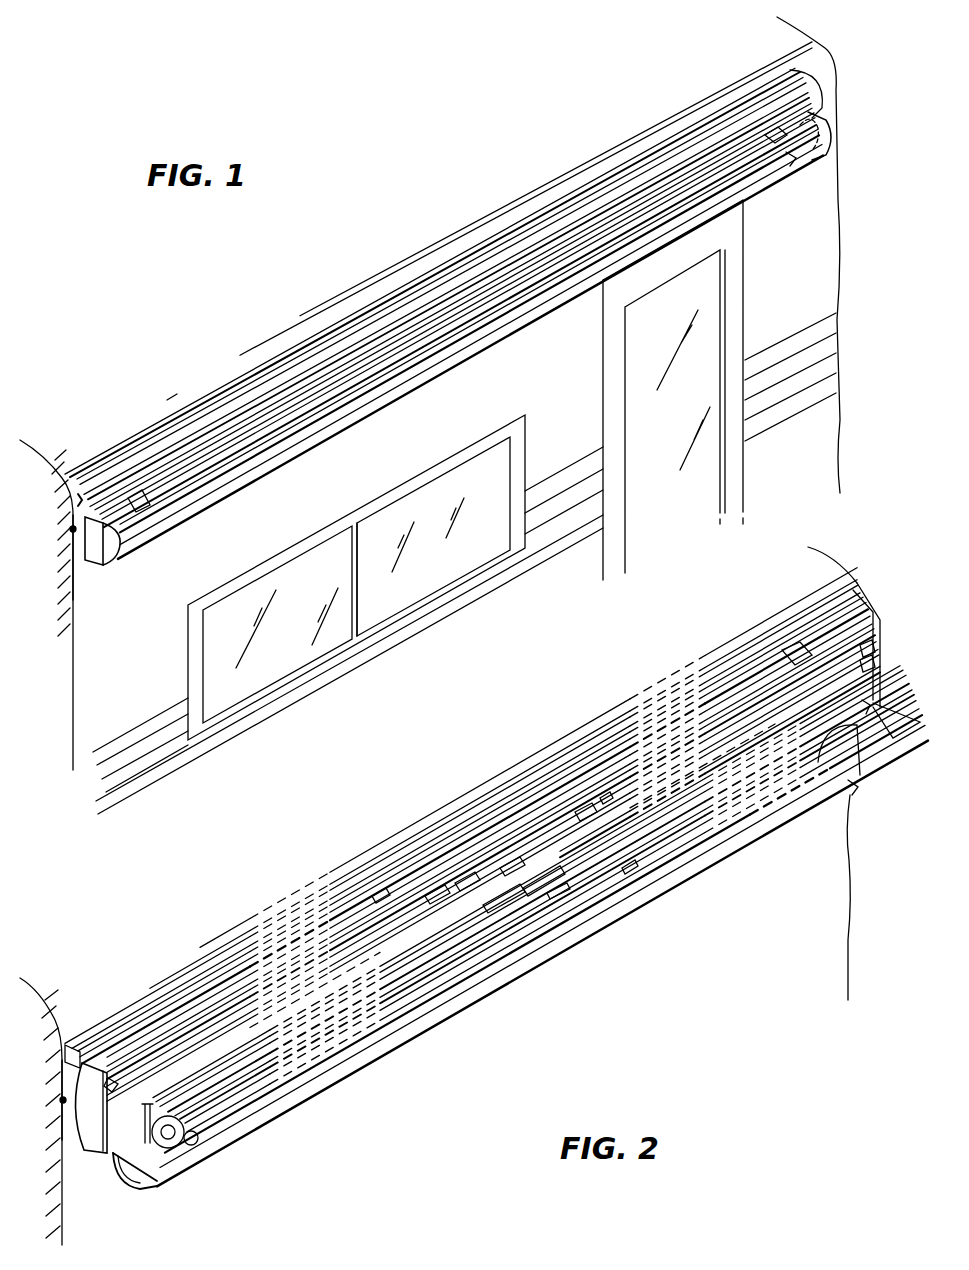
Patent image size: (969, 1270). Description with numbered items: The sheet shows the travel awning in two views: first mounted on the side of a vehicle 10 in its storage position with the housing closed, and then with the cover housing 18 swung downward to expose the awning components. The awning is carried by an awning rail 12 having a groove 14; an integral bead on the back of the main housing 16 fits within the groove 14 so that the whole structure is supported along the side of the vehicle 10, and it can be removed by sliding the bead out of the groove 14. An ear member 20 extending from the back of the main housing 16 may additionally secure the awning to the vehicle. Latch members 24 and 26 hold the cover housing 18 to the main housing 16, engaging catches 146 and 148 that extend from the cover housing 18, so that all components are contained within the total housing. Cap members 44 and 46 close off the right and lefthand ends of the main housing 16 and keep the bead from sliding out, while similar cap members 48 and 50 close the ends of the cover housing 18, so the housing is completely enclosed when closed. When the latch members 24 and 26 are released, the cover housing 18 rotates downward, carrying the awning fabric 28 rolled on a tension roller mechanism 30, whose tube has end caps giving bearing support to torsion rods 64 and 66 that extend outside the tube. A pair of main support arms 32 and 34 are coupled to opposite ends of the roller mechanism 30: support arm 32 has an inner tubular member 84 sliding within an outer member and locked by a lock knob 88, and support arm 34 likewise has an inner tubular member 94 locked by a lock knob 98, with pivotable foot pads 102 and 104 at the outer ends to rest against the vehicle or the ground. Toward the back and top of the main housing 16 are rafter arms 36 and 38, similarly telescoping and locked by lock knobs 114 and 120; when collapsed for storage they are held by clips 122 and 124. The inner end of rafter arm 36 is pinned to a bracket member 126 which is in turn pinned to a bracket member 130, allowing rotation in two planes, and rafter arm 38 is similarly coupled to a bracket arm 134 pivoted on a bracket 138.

In FIG. 1, the vehicle 10 is at (111, 470).
In FIG. 2, the vehicle 10 is at (198, 946).
In FIG. 1, the awning rail 12 is at (79, 499).
In FIG. 2, the awning rail 12 is at (127, 1085).
In FIG. 1, the groove 14 is at (71, 529).
In FIG. 2, the groove 14 is at (62, 1099).
In FIG. 1, the main housing 16 is at (197, 457).
In FIG. 2, the main housing 16 is at (233, 987).
In FIG. 1, the cover housing 18 is at (273, 465).
In FIG. 2, the cover housing 18 is at (272, 1125).
In FIG. 1, the ear member 20 is at (70, 556).
In FIG. 2, the ear member 20 is at (68, 1103).
In FIG. 1, the latch member 24 is at (157, 475).
In FIG. 2, the latch member 24 is at (177, 1010).
In FIG. 1, the latch member 26 is at (762, 128).
In FIG. 2, the latch member 26 is at (793, 650).
In FIG. 2, the awning fabric 28 is at (457, 960).
In FIG. 2, the tension roller mechanism 30 is at (193, 1146).
In FIG. 2, the main support arm 32 is at (400, 967).
In FIG. 2, the main support arm 34 is at (627, 865).
In FIG. 2, the rafter arm 36 is at (377, 893).
In FIG. 2, the rafter arm 38 is at (593, 800).
In FIG. 1, the cap member 44 is at (90, 552).
In FIG. 2, the cap member 44 is at (90, 1140).
In FIG. 1, the cap member 46 is at (803, 107).
In FIG. 2, the cap member 46 is at (883, 637).
In FIG. 1, the cap member 48 is at (113, 562).
In FIG. 2, the cap member 48 is at (137, 1186).
In FIG. 1, the cap member 50 is at (830, 125).
In FIG. 2, the cap member 50 is at (903, 718).
In FIG. 2, the torsion rod 64 is at (128, 1172).
In FIG. 2, the torsion rod 66 is at (835, 735).
In FIG. 2, the inner tubular member 84 is at (207, 1112).
In FIG. 2, the lock knob 88 is at (493, 920).
In FIG. 2, the inner tubular member 94 is at (867, 716).
In FIG. 2, the lock knob 98 is at (540, 870).
In FIG. 2, the foot pad 102 is at (520, 893).
In FIG. 2, the foot pad 104 is at (575, 873).
In FIG. 2, the lock knob 114 is at (433, 887).
In FIG. 2, the lock knob 120 is at (527, 833).
In FIG. 2, the clip 122 is at (407, 910).
In FIG. 2, the clip 124 is at (567, 813).
In FIG. 2, the bracket member 126 is at (112, 1080).
In FIG. 2, the bracket member 130 is at (110, 1087).
In FIG. 2, the bracket arm 134 is at (868, 662).
In FIG. 2, the bracket 138 is at (867, 642).
In FIG. 1, the catch 146 is at (157, 513).
In FIG. 2, the catch 146 is at (247, 1142).
In FIG. 1, the catch 148 is at (790, 160).
In FIG. 2, the catch 148 is at (852, 790).